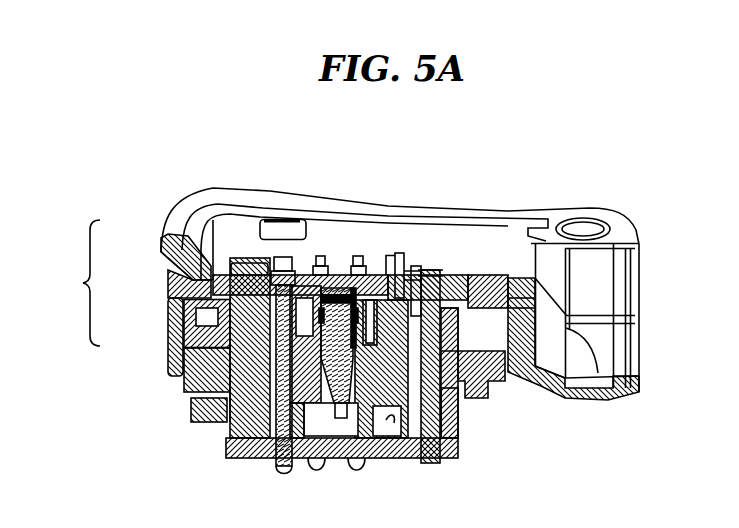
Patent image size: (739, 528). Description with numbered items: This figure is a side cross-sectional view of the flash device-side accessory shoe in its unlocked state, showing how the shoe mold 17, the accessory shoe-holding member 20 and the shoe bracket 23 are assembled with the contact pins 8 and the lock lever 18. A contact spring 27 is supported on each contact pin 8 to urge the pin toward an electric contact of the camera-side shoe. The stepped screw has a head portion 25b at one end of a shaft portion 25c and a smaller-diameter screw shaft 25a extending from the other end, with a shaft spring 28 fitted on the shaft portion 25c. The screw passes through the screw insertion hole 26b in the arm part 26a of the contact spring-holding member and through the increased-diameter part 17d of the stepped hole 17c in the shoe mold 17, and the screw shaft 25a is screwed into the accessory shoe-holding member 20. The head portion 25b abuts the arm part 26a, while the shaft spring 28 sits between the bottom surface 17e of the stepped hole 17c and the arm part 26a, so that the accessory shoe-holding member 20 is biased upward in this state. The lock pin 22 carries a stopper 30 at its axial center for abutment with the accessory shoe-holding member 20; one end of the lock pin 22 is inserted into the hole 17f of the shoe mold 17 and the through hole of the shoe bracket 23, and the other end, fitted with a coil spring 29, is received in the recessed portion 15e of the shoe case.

The contact pin 8 is at (278, 466).
The recessed portion 15e is at (418, 250).
The shoe mold 17 is at (443, 300).
The stepped hole 17c is at (61, 283).
The increased-diameter part 17d is at (222, 316).
The bottom surface 17e is at (300, 313).
The hole 17f is at (265, 331).
The lock lever 18 is at (500, 336).
The accessory shoe-holding member 20 is at (352, 420).
The lock pin 22 is at (422, 456).
The shoe bracket 23 is at (443, 445).
The screw shaft 25a is at (340, 365).
The head portion 25b is at (330, 285).
The shaft portion 25c is at (320, 310).
The arm part 26a is at (360, 287).
The screw insertion hole 26b is at (455, 380).
The contact spring 27 is at (221, 384).
The shaft spring 28 is at (311, 330).
The coil spring 29 is at (496, 302).
The stopper 30 is at (500, 308).